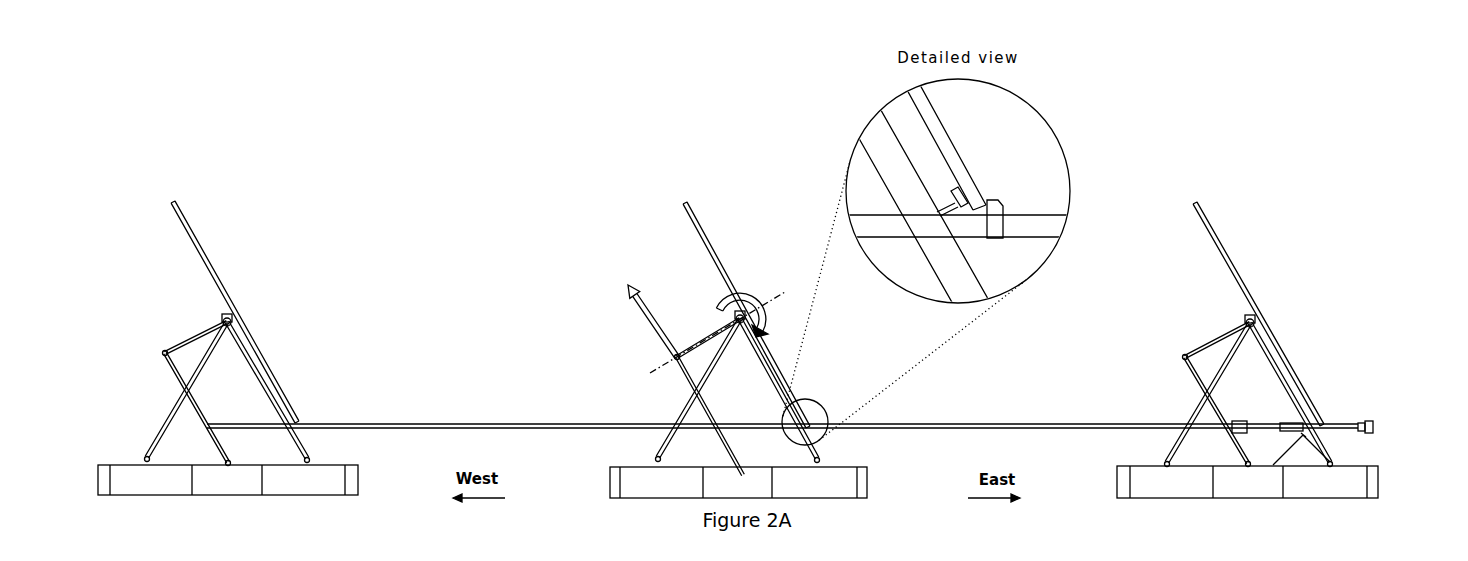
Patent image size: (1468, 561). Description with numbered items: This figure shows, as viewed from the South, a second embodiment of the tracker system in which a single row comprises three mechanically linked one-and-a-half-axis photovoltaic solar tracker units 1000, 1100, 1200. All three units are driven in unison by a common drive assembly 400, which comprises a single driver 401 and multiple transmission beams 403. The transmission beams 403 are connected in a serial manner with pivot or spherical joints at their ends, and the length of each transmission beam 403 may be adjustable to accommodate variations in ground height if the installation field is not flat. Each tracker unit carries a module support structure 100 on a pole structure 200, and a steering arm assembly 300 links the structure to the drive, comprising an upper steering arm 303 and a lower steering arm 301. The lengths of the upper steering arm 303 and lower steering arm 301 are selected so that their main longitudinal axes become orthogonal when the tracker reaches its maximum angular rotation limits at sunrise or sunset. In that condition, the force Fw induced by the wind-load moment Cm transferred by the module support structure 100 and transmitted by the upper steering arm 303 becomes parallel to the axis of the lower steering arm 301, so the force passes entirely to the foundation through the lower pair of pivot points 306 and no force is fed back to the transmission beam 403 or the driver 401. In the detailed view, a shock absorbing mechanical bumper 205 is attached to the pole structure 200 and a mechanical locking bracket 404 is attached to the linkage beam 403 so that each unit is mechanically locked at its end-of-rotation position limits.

The photovoltaic solar tracker unit 1200 is at (158, 67).
The photovoltaic solar tracker unit 1100 is at (662, 68).
The photovoltaic solar tracker unit 1000 is at (1145, 72).
The module support structure 100 is at (945, 146).
The pole structure 200 is at (890, 163).
The shock absorbing mechanical bumper 205 is at (940, 212).
The mechanical locking bracket 404 is at (990, 200).
The transmission beam 403 is at (1035, 425).
The steering arm assembly 300 is at (547, 325).
The lower steering arm 301 is at (700, 386).
The upper steering arm 303 is at (706, 326).
The lower pair of pivot points 306 is at (655, 457).
The common drive assembly 400 is at (1378, 410).
The driver 401 is at (1345, 421).